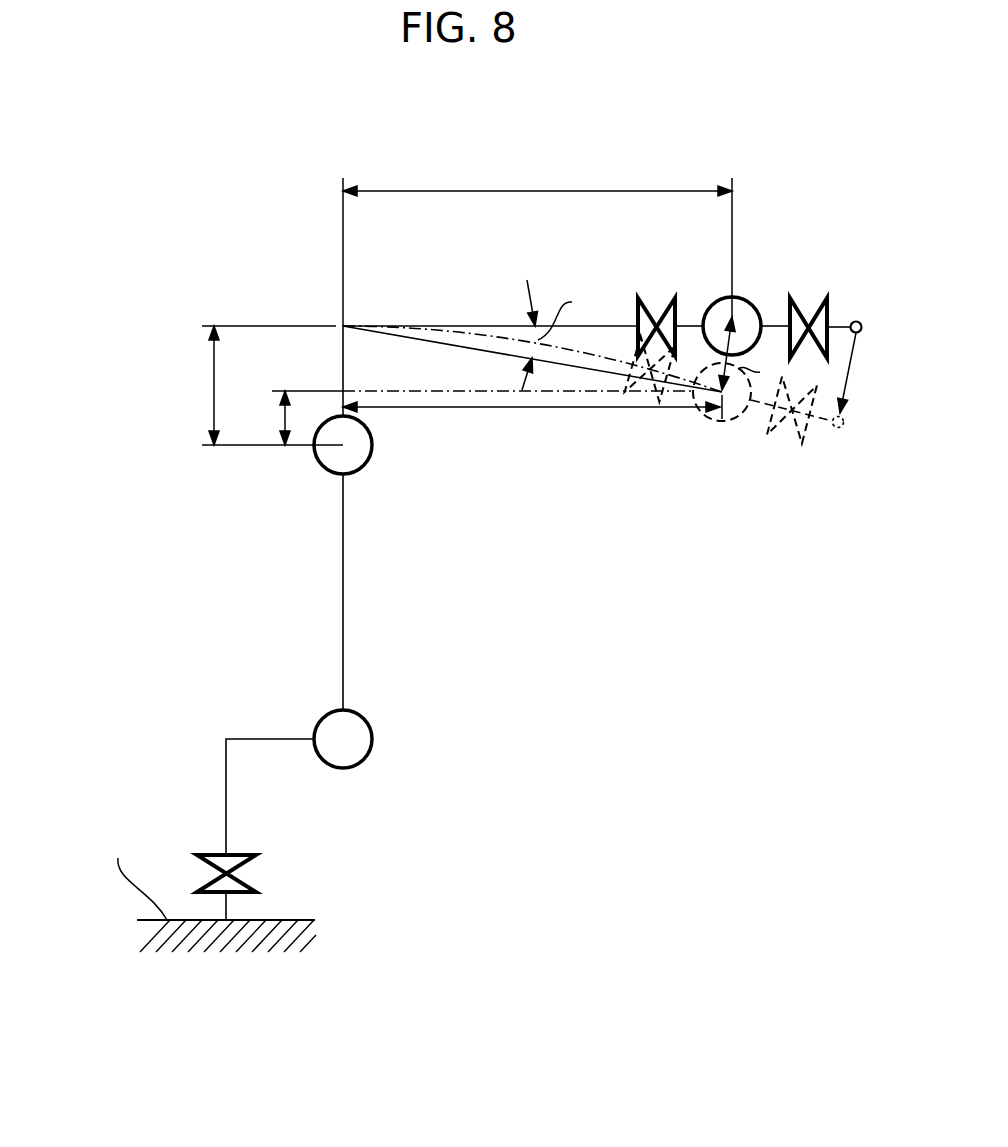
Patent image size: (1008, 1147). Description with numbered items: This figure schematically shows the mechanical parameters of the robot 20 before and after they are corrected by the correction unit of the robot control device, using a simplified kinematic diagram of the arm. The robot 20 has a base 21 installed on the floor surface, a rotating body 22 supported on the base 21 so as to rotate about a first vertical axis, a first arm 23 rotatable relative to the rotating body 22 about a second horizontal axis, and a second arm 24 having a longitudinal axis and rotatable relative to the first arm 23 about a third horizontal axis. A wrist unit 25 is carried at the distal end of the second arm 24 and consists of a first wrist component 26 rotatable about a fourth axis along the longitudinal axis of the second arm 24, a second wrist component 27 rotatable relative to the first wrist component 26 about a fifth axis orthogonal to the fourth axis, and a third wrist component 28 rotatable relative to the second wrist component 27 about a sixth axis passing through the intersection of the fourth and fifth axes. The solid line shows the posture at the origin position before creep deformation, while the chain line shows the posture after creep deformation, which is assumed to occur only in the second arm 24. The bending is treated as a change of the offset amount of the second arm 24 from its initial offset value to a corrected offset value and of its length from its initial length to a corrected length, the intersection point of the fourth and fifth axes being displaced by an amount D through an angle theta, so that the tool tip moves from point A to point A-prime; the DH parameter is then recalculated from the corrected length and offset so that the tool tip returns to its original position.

The robot 20 is at (128, 334).
The base 21 is at (248, 881).
The rotating body 22 is at (226, 793).
The first arm 23 is at (345, 588).
The second arm 24 is at (458, 326).
The wrist unit 25 is at (743, 294).
The first wrist component 26 is at (690, 324).
The second wrist component 27 is at (780, 322).
The third wrist component 28 is at (837, 322).